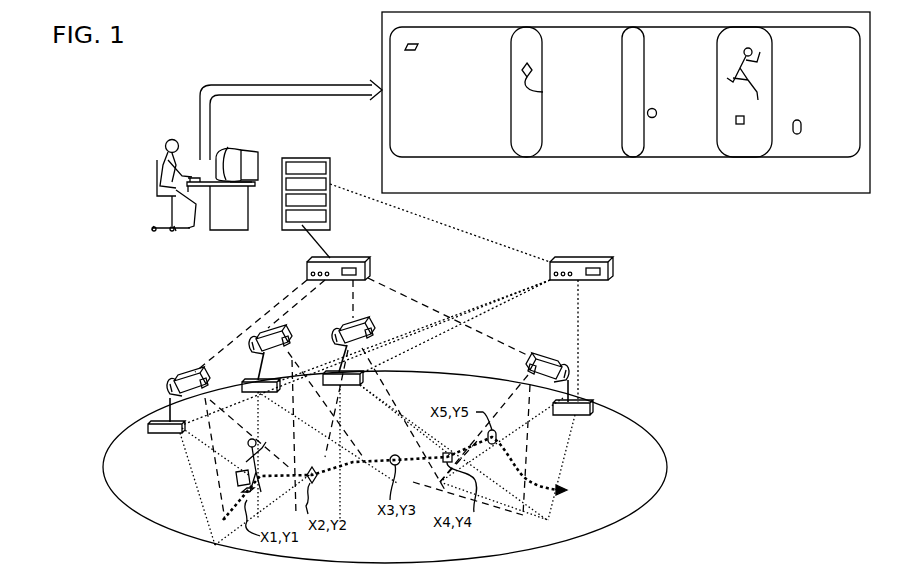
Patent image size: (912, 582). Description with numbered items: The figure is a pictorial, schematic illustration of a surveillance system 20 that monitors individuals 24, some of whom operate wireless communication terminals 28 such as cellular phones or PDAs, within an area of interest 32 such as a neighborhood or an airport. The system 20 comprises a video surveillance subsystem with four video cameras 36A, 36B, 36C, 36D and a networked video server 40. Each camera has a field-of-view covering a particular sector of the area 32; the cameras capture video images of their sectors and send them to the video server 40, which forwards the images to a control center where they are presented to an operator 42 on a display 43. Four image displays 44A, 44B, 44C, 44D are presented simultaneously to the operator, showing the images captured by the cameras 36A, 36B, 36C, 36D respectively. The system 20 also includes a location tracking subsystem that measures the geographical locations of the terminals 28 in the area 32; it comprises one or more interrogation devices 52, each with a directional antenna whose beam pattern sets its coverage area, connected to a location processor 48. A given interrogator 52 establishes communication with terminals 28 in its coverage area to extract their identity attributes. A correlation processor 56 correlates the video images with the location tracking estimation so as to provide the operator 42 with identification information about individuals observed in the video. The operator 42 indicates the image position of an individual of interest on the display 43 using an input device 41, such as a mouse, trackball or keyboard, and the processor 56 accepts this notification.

The surveillance system 20 is at (98, 124).
The individuals 24 is at (248, 450).
The wireless communication terminals 28 is at (264, 452).
The area of interest 32 is at (128, 418).
The video camera 36A is at (184, 370).
The video camera 36B is at (284, 332).
The video camera 36C is at (380, 330).
The video camera 36D is at (550, 352).
The networked video server 40 is at (306, 270).
The input device 41 is at (222, 183).
The operator 42 is at (170, 138).
The display 43 is at (238, 186).
The image display 44A is at (440, 158).
The image display 44B is at (558, 158).
The image display 44C is at (670, 158).
The image display 44D is at (790, 158).
The location processor 48 is at (612, 265).
The interrogation devices 52 is at (170, 434).
The correlation processor 56 is at (331, 163).